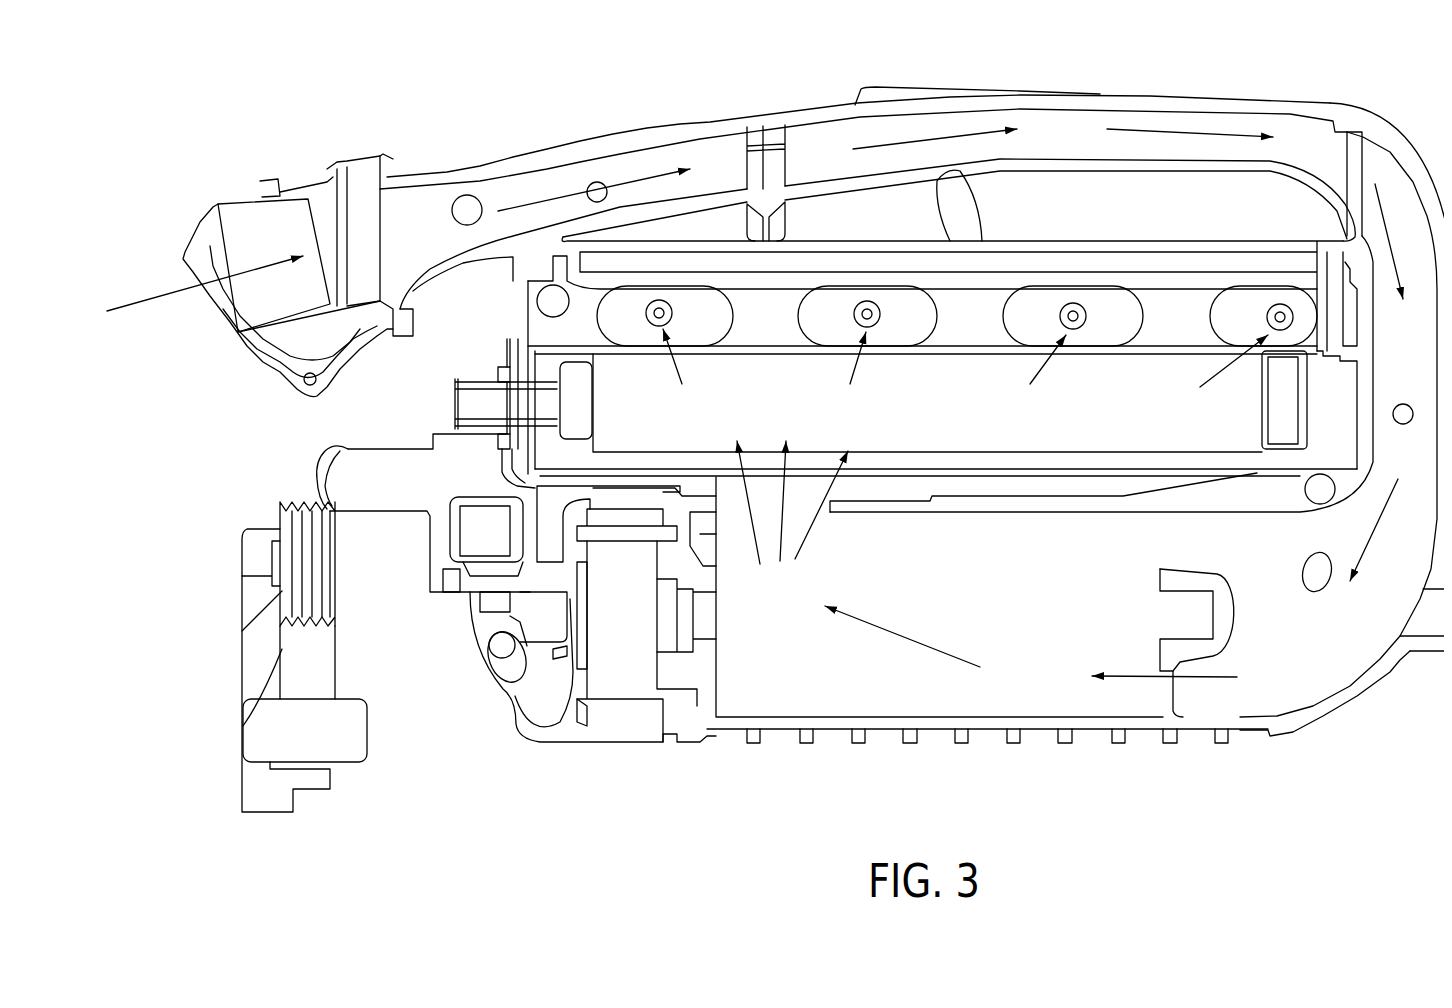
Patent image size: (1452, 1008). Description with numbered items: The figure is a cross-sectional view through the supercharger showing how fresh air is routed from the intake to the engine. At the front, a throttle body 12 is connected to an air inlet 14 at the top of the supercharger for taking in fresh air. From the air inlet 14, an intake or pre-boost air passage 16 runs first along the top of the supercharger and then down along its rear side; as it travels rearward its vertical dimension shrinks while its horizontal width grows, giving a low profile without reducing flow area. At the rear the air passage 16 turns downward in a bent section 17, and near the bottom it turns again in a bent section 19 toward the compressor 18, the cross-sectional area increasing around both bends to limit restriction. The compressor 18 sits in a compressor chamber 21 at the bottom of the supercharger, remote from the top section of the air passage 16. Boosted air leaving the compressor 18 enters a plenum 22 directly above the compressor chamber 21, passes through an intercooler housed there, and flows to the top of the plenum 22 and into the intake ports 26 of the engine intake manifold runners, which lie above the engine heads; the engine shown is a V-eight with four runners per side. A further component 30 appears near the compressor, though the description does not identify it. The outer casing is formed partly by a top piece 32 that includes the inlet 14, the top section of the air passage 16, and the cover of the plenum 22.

The throttle body 12 is at (327, 217).
The air inlet 14 is at (373, 172).
The intake air passage 16 is at (697, 125).
The bent section 17 is at (1360, 122).
The compressor 18 is at (1097, 642).
The bent section 19 is at (1397, 657).
The compressor chamber 21 is at (985, 685).
The plenum 22 is at (930, 419).
The intake ports 26 is at (657, 330).
The motor 30 is at (665, 613).
The top piece 32 is at (745, 648).